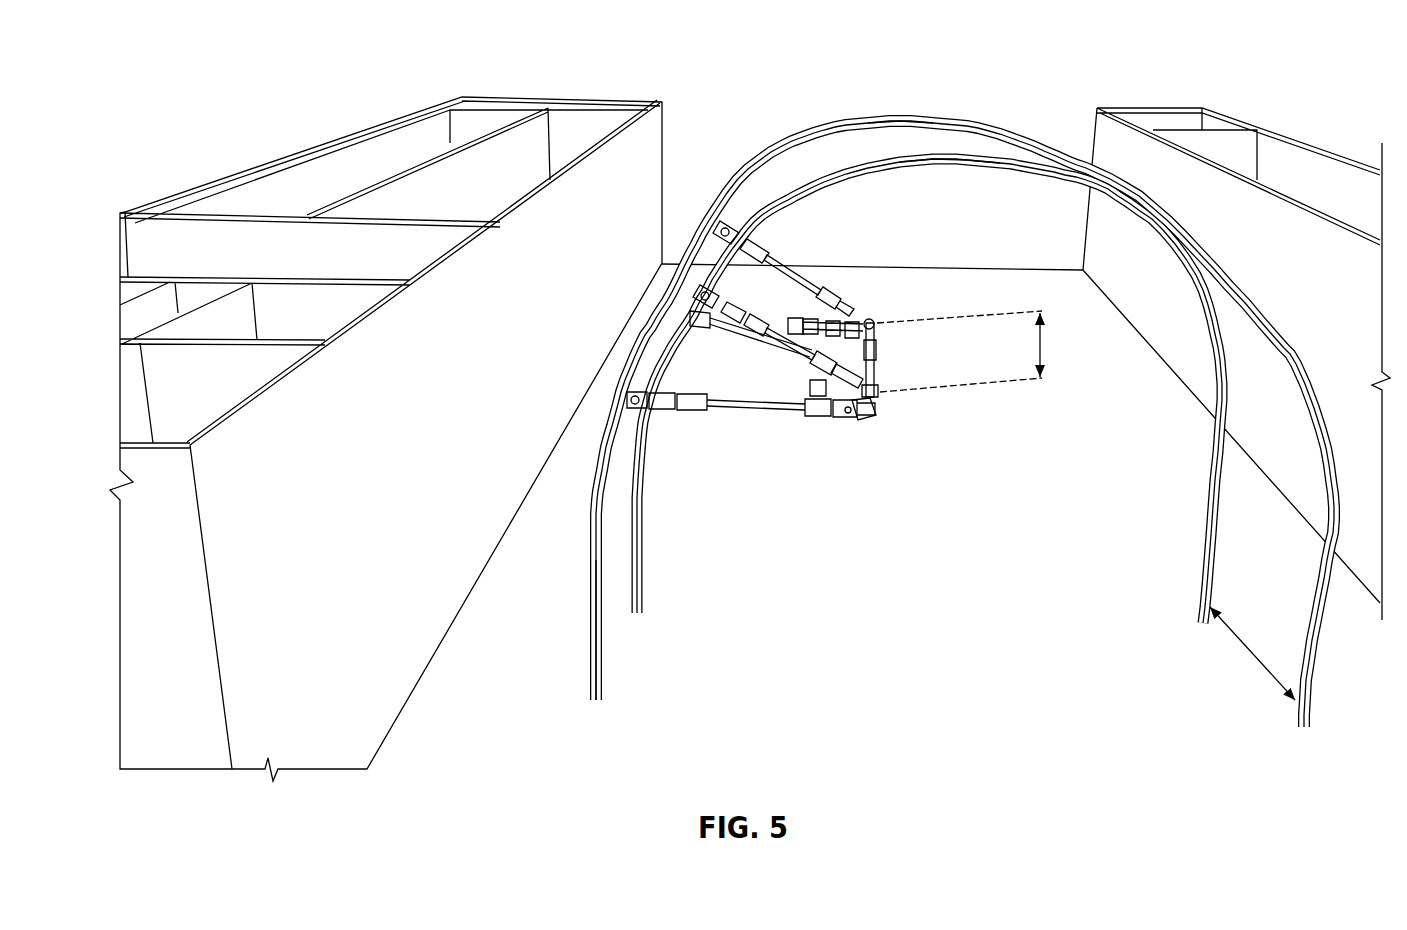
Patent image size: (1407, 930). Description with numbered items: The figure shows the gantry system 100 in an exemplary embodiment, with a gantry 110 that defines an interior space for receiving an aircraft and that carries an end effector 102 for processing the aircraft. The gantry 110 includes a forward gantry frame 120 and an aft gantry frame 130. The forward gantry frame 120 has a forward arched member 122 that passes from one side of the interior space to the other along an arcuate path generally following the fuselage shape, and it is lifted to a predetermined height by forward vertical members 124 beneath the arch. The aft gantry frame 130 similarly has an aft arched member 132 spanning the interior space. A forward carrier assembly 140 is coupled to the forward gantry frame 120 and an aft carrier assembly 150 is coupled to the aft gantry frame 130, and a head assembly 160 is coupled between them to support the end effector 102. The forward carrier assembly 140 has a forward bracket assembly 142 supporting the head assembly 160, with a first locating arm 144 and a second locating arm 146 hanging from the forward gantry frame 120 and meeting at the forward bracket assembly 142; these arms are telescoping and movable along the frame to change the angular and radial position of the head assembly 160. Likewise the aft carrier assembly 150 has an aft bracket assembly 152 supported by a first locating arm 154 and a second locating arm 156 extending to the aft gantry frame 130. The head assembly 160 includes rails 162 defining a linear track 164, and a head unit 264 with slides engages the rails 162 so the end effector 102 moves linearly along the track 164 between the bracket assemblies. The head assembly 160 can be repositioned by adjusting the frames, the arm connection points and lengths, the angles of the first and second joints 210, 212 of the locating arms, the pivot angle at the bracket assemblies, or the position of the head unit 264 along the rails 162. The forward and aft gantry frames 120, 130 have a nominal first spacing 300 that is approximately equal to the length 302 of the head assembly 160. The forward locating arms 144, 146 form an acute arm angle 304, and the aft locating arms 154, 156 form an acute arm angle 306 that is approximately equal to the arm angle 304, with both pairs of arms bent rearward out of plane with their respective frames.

The gantry system 100 is at (897, 370).
The end effector 102 is at (892, 356).
The gantry 110 is at (762, 160).
The forward gantry frame 120 is at (897, 392).
The forward arched member 122 is at (980, 160).
The forward vertical members 124 is at (603, 628).
The aft gantry frame 130 is at (862, 343).
The aft arched member 132 is at (890, 123).
The forward carrier assembly 140 is at (780, 450).
The forward bracket assembly 142 is at (860, 412).
The first locating arm 144 is at (733, 411).
The second locating arm 146 is at (715, 336).
The aft carrier assembly 150 is at (844, 261).
The aft bracket assembly 152 is at (877, 336).
The first locating arm 154 is at (850, 275).
The second locating arm 156 is at (790, 318).
The head assembly 160 is at (902, 355).
The rails 162 is at (879, 350).
The track 164 is at (788, 350).
The first joint 210 is at (808, 416).
The second joint 212 is at (672, 417).
The head unit 264 is at (894, 375).
The first spacing 300 is at (1247, 653).
The length 302 is at (1042, 343).
The arm angle 304 is at (817, 392).
The arm angle 306 is at (828, 319).